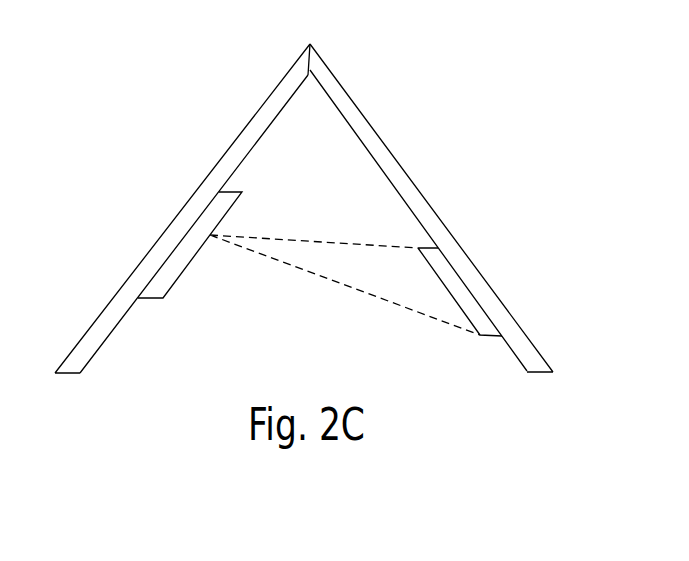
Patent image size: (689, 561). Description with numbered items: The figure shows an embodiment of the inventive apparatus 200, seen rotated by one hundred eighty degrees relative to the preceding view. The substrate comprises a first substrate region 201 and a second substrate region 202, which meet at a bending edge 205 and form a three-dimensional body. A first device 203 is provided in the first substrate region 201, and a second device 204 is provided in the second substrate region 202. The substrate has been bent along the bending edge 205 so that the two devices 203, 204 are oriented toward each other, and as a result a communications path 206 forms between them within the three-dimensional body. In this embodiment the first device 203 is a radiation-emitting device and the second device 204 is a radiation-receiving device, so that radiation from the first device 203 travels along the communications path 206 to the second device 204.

The apparatus 200 is at (305, 198).
The first substrate region 201 is at (262, 117).
The second substrate region 202 is at (400, 182).
The first device 203 is at (167, 272).
The second device 204 is at (460, 292).
The bending edge 205 is at (313, 64).
The communications path 206 is at (383, 300).